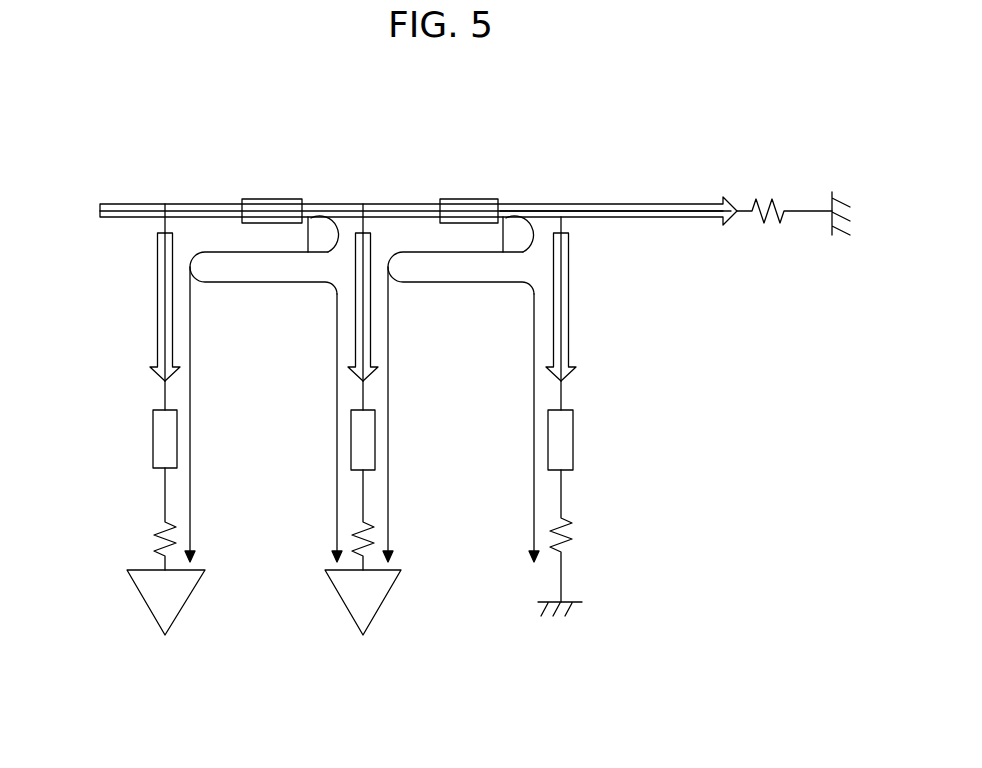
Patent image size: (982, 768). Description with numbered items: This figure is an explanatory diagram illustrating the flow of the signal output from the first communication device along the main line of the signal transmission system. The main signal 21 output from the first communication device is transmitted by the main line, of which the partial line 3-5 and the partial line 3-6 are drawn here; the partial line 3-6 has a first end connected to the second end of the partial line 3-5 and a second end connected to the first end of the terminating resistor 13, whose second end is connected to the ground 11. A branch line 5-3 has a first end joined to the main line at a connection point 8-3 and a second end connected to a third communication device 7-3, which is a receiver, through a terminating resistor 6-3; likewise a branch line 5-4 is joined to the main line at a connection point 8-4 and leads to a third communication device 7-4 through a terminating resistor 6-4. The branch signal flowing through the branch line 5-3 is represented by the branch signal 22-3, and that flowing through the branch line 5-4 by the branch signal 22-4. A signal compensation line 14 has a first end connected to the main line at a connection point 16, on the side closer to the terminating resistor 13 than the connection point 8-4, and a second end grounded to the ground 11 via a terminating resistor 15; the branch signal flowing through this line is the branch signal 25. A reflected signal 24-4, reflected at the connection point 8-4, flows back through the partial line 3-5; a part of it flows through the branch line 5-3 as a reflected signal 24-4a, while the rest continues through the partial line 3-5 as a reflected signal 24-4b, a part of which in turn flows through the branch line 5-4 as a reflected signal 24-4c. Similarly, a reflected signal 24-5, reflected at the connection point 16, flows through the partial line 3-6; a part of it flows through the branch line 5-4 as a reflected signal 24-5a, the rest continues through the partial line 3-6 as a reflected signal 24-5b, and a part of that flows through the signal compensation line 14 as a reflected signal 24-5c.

The partial line 3-5 is at (265, 199).
The partial line 3-6 is at (462, 199).
The branch line 5-3 is at (153, 435).
The branch line 5-4 is at (351, 435).
The terminating resistor 6-3 is at (160, 520).
The terminating resistor 6-4 is at (360, 520).
The third communication device 7-3 is at (150, 612).
The third communication device 7-4 is at (348, 612).
The connection point 8-3 is at (165, 204).
The connection point 8-4 is at (363, 204).
The ground 11 is at (572, 612).
The terminating resistor 13 is at (770, 199).
The signal compensation line 14 is at (573, 437).
The terminating resistor 15 is at (566, 553).
The connection point 16 is at (565, 203).
The main signal 21 is at (668, 219).
The branch signal 22-3 is at (157, 302).
The branch signal 22-4 is at (355, 348).
The reflected signal 24-4 is at (308, 204).
The reflected signal 24-4a is at (190, 391).
The reflected signal 24-4b is at (226, 283).
The reflected signal 24-4c is at (337, 478).
The reflected signal 24-5 is at (503, 204).
The reflected signal 24-5a is at (390, 517).
The reflected signal 24-5b is at (424, 283).
The reflected signal 24-5c is at (533, 458).
The branch signal 25 is at (569, 325).